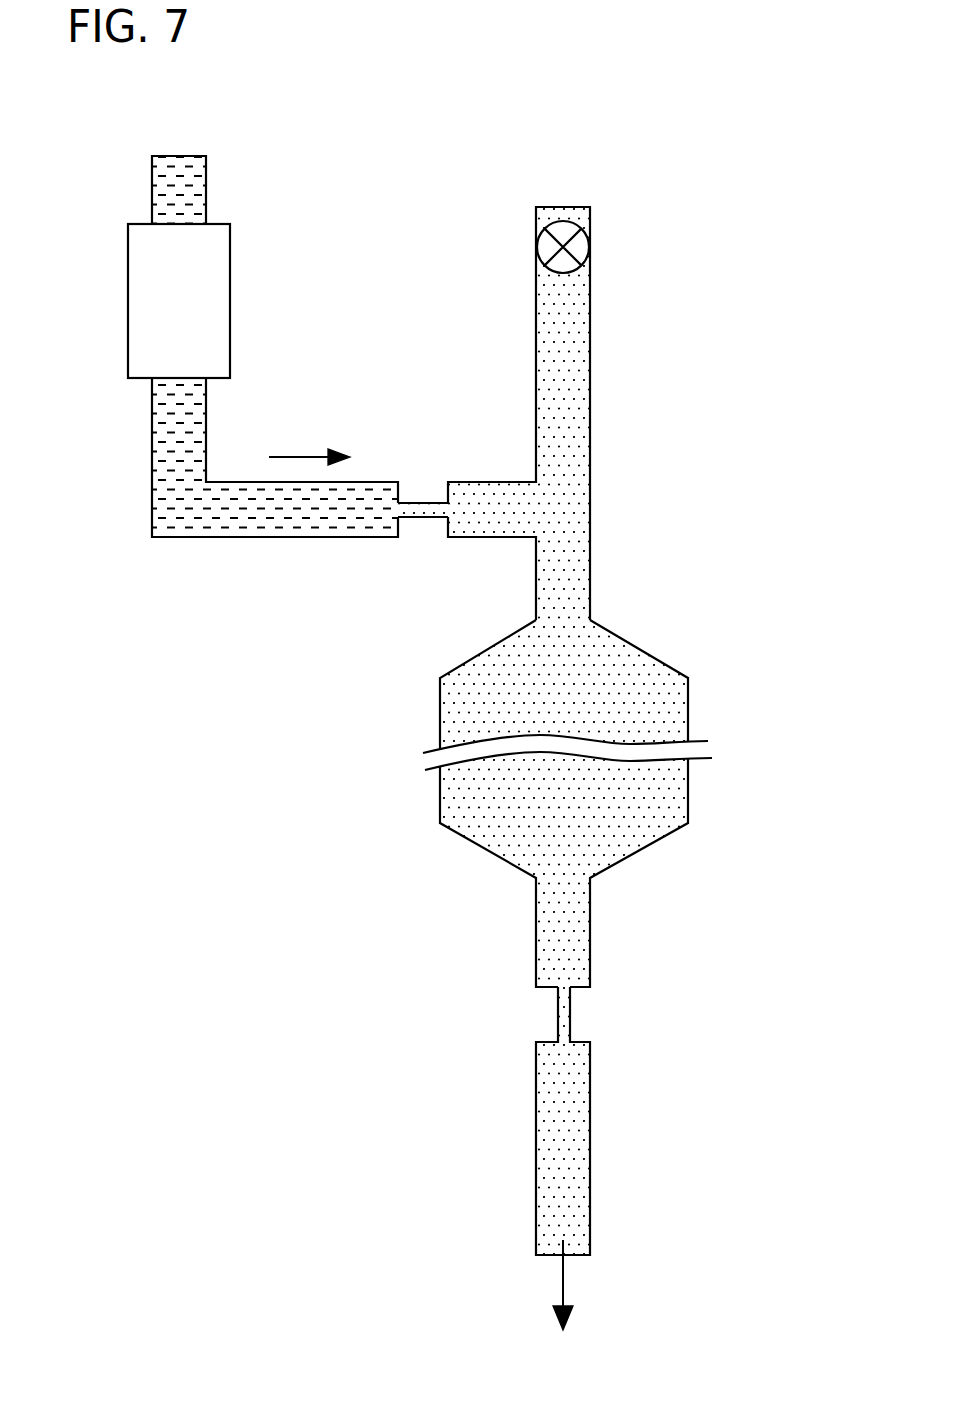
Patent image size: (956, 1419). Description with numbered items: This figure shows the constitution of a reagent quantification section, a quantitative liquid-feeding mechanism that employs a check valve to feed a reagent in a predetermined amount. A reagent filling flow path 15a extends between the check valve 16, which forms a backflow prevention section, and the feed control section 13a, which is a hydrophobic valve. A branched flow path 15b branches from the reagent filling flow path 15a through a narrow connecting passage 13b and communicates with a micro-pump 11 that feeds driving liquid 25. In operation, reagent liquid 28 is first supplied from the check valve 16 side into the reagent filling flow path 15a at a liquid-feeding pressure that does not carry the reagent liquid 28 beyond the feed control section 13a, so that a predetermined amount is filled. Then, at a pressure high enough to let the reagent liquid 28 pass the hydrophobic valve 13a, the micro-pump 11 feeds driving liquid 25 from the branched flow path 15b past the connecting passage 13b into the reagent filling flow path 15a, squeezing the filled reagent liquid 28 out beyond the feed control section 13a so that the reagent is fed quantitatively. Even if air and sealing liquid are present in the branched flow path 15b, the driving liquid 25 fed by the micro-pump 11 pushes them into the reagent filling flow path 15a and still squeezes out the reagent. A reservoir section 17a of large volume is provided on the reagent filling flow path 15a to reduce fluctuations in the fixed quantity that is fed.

The micro-pump 11 is at (128, 299).
The driving liquid 25 is at (215, 518).
The branched flow path 15b is at (299, 540).
The second narrow channel 13b is at (428, 540).
The reagent filling flow path 15a is at (592, 456).
The reagent liquid 28 is at (578, 349).
The check valve 16 is at (537, 247).
The reservoir section 17a is at (465, 810).
The feed control section 13a is at (532, 1020).